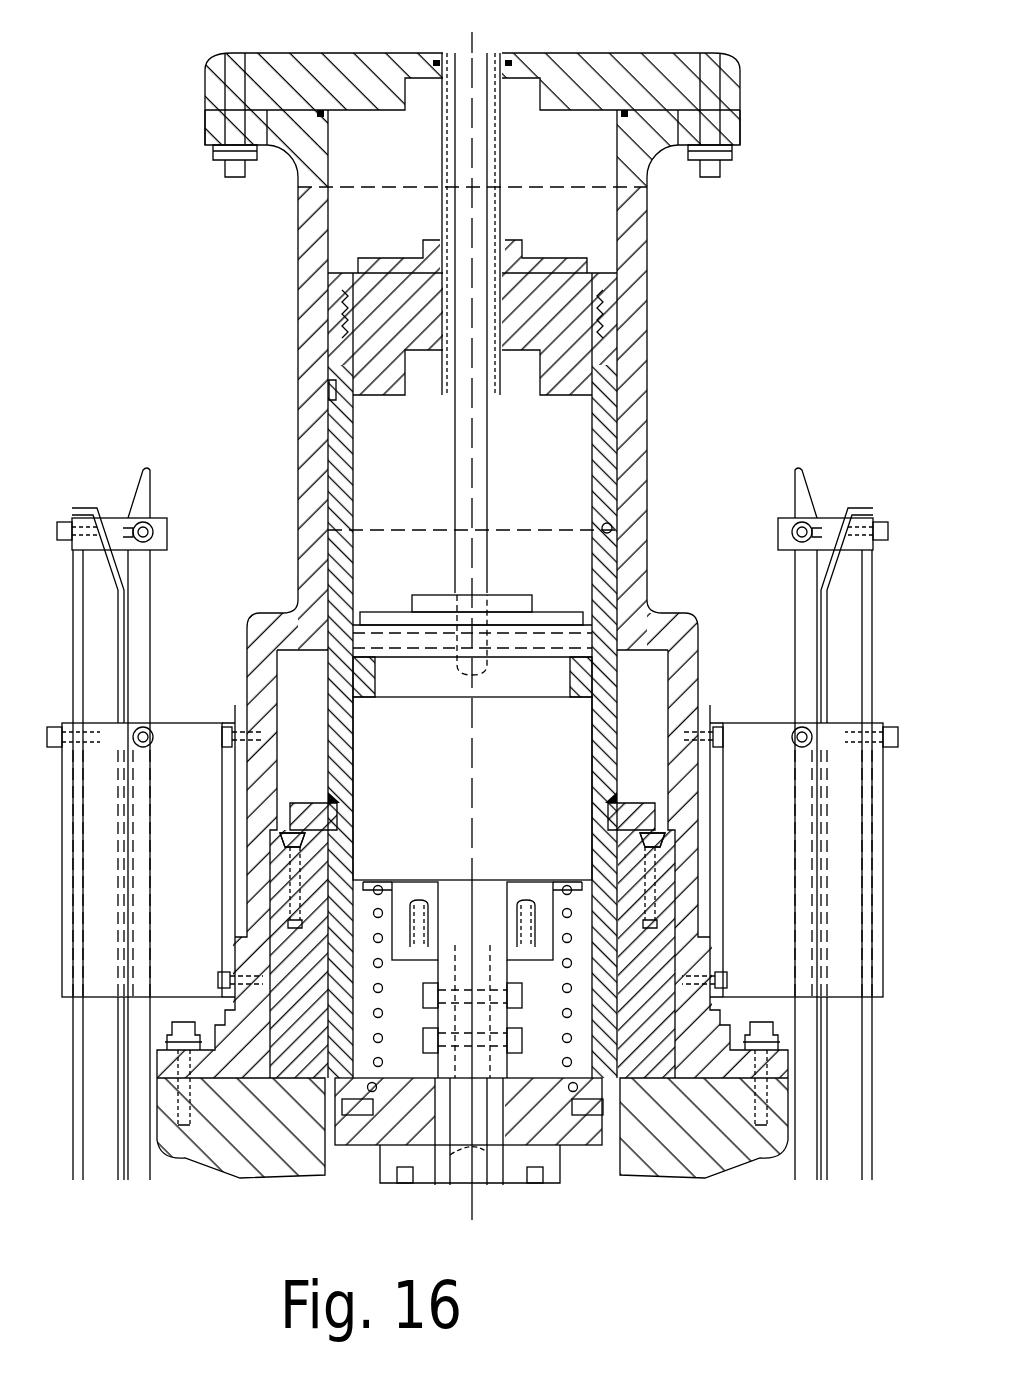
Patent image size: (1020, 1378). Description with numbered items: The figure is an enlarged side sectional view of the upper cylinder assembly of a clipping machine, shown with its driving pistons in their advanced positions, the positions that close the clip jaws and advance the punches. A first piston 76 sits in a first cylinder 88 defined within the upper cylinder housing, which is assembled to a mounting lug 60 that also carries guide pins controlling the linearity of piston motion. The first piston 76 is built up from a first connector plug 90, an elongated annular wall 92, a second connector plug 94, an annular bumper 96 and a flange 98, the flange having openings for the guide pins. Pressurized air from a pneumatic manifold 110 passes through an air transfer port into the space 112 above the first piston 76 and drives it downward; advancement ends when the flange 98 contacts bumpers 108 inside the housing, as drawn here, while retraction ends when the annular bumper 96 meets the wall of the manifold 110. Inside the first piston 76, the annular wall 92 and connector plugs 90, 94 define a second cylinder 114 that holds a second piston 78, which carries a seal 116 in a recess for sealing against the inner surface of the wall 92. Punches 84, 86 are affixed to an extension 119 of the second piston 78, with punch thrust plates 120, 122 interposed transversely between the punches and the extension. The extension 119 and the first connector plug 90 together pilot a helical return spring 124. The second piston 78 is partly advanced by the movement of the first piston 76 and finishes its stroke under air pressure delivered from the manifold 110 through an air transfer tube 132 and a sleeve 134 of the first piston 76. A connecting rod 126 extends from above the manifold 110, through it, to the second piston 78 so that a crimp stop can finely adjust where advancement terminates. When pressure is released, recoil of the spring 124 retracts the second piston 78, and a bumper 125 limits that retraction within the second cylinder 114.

The mounting lug 60 is at (248, 1148).
The first piston 76 is at (610, 466).
The second piston 78 is at (388, 730).
The punch 84 is at (450, 1178).
The punch 86 is at (497, 1178).
The first cylinder 88 is at (612, 548).
The first connector plug 90 is at (362, 1144).
The annular wall 92 is at (605, 440).
The second connector plug 94 is at (540, 282).
The annular bumper 96 is at (582, 266).
The flange 98 is at (652, 768).
The bumpers 108 is at (282, 853).
The pneumatic manifold 110 is at (608, 83).
The space 112 is at (312, 205).
The second cylinder 114 is at (340, 428).
The seal 116 is at (365, 662).
The extension 119 is at (543, 900).
The punch thrust plate 120 is at (400, 955).
The punch thrust plate 122 is at (550, 956).
The helical return spring 124 is at (373, 1040).
The bumper 125 is at (572, 616).
The connecting rod 126 is at (477, 53).
The air transfer tube 132 is at (490, 52).
The sleeve 134 is at (502, 153).